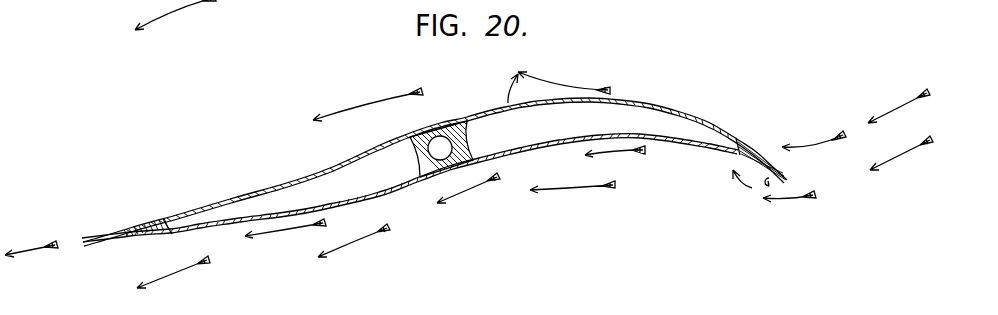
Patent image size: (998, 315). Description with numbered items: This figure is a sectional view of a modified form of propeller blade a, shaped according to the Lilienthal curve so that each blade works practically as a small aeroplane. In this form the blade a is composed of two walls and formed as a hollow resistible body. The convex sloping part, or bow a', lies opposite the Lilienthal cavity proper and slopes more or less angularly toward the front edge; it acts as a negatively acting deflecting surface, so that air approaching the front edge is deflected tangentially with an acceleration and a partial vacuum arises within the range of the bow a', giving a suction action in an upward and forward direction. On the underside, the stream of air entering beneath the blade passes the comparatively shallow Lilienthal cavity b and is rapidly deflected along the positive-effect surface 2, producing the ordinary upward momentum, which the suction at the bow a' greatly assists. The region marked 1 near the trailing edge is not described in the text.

The blade a is at (434, 160).
The convex sloping part a' is at (435, 160).
The Lilienthal cavity b is at (653, 143).
The trailing edge vortex 1 is at (774, 186).
The positive-effect surface 2 is at (468, 196).